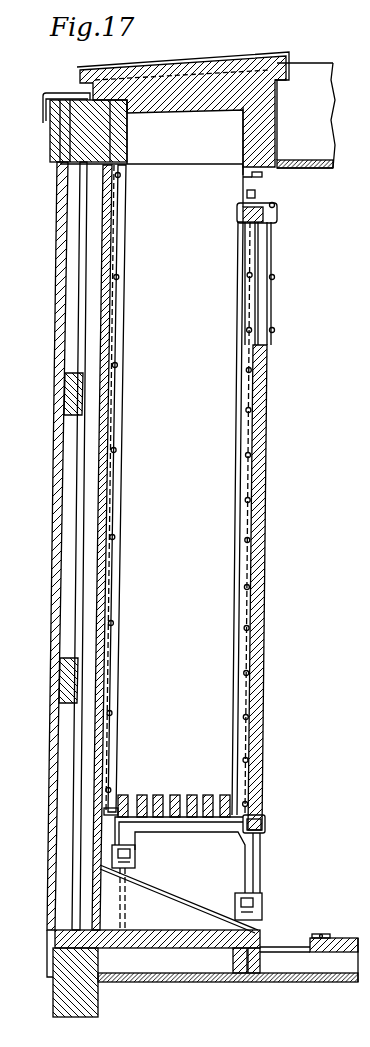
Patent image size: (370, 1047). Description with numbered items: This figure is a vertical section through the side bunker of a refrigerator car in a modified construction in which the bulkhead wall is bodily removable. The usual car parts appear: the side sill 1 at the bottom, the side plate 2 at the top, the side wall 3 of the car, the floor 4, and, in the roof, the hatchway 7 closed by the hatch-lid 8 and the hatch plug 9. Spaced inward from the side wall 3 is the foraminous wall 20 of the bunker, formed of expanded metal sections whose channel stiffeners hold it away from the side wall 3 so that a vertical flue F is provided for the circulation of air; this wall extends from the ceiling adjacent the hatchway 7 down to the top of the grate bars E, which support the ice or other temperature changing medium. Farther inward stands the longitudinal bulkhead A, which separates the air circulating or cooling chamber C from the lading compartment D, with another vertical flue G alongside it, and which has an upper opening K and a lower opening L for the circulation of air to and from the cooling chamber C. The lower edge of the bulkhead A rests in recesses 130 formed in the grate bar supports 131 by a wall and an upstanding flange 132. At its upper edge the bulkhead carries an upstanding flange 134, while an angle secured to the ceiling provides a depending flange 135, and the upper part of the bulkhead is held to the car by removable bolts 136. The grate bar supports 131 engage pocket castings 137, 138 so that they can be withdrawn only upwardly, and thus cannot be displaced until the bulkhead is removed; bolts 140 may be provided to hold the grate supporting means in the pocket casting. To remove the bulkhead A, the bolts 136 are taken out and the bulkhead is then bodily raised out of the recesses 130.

The hatch-lid 8 is at (204, 72).
The hatch plug 9 is at (209, 99).
The side plate 2 is at (90, 140).
The hatchway 7 is at (172, 152).
The upstanding flange 134 is at (258, 192).
The depending flange 135 is at (241, 182).
The removable bolts 136 is at (240, 210).
The upper opening K is at (228, 329).
The vertical flue G is at (242, 487).
The longitudinal bulkhead A is at (268, 522).
The vertical flue F is at (112, 490).
The side wall 3 is at (88, 584).
The air circulating chamber C is at (144, 488).
The lading compartment D is at (299, 596).
The foraminous wall 20 is at (120, 682).
The grate bars E is at (143, 795).
The lower opening L is at (228, 880).
The recesses 130 is at (258, 808).
The upstanding flange 132 is at (266, 826).
The grate bar supports 131 is at (201, 826).
The pocket casting 137 is at (140, 862).
The pocket casting 138 is at (236, 906).
The bolts 140 is at (263, 898).
The floor 4 is at (345, 938).
The side sill 1 is at (62, 990).